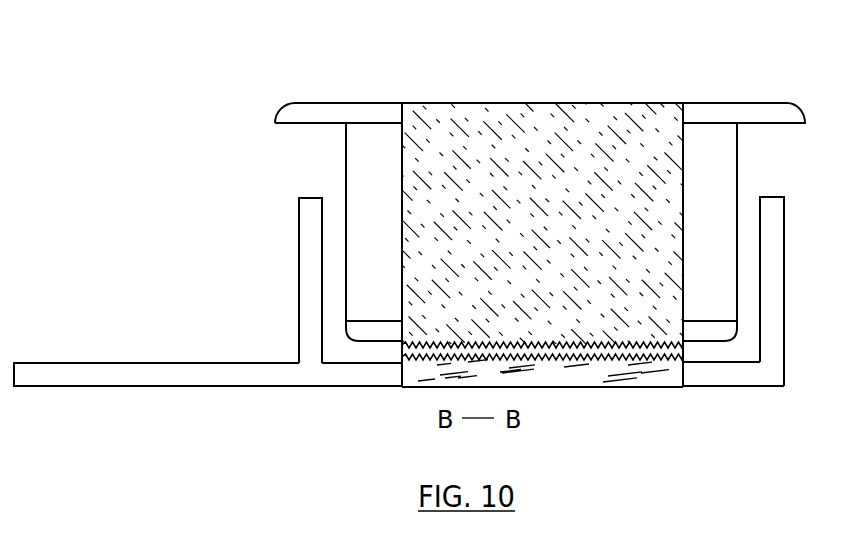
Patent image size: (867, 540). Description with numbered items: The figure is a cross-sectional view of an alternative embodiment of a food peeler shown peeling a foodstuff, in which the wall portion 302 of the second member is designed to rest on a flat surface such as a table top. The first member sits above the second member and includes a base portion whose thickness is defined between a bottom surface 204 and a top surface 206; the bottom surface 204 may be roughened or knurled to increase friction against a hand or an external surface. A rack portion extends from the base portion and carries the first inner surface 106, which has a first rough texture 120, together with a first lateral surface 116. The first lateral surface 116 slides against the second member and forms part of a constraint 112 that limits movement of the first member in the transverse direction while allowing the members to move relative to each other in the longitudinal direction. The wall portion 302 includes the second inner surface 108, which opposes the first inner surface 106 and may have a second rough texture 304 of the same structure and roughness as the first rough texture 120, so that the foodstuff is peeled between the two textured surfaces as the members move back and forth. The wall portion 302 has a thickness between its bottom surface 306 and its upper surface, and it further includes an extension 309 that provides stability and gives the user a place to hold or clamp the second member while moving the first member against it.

The first inner surface 106 is at (376, 348).
The second inner surface 108 is at (733, 362).
The constraint 112 is at (310, 242).
The first lateral surface 116 is at (347, 162).
The first rough texture 120 is at (531, 104).
The bottom surface 204 is at (724, 103).
The top surface 206 is at (763, 124).
The wall portion 302 is at (347, 372).
The second rough texture 304 is at (567, 388).
The bottom surface 306 is at (707, 387).
The extension 309 is at (130, 368).